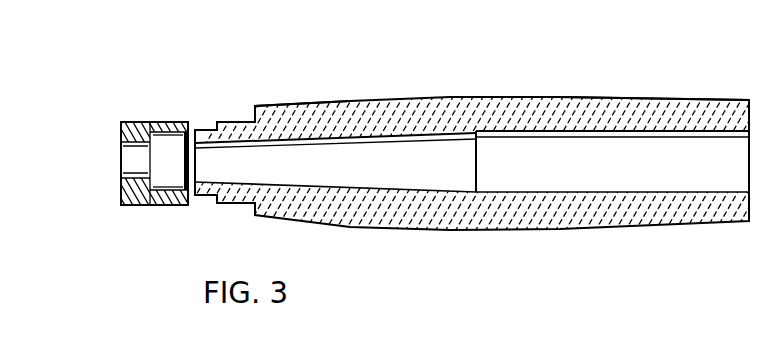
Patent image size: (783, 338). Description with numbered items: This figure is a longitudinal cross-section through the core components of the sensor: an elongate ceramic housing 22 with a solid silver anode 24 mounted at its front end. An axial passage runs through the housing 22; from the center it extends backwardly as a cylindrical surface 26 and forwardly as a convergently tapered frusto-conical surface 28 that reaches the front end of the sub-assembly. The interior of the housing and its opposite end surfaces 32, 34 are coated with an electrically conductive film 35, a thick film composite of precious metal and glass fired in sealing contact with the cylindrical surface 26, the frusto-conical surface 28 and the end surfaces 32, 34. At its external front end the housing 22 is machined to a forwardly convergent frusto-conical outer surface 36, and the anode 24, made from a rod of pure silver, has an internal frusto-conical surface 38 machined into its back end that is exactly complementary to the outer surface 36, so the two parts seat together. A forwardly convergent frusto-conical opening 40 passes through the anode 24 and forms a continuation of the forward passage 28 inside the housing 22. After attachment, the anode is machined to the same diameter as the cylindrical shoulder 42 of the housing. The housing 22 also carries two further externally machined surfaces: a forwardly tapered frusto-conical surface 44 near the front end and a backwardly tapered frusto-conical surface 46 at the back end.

The ceramic housing 22 is at (428, 124).
The anode 24 is at (140, 122).
The cylindrical surface 26 is at (673, 131).
The frusto-conical surface 28 is at (267, 140).
The end surface 32 is at (170, 204).
The end surface 34 is at (751, 222).
The electrically conductive film 35 is at (543, 193).
The tapered frusto-conical outer surface 36 is at (195, 128).
The internal frusto-conical surface 38 is at (168, 134).
The frusto-conical opening 40 is at (143, 146).
The cylindrical shoulder 42 is at (232, 122).
The forwardly tapered frusto-conical surface 44 is at (278, 106).
The backwardly tapered frusto-conical surface 46 is at (738, 100).